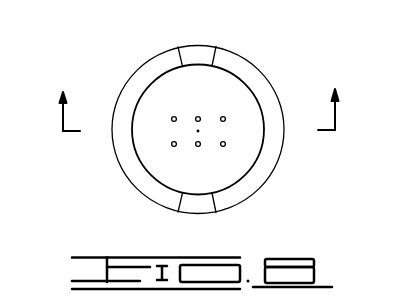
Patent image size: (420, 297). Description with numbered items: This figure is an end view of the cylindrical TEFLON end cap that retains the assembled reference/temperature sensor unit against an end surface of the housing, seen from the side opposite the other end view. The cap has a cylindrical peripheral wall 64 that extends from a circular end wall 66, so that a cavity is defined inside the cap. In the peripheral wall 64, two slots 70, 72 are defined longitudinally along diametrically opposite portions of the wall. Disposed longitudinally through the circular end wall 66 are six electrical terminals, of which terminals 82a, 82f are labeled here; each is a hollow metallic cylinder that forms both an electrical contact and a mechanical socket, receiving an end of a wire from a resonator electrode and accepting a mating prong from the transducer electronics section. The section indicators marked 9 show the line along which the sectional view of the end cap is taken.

The cylindrical peripheral wall 64 is at (155, 75).
The circular end wall 66 is at (223, 88).
The slot 70 is at (182, 50).
The slot 72 is at (184, 207).
The electrical terminal 82a is at (225, 117).
The electrical terminal 82f is at (172, 145).
The section line 9- 9 is at (198, 110).